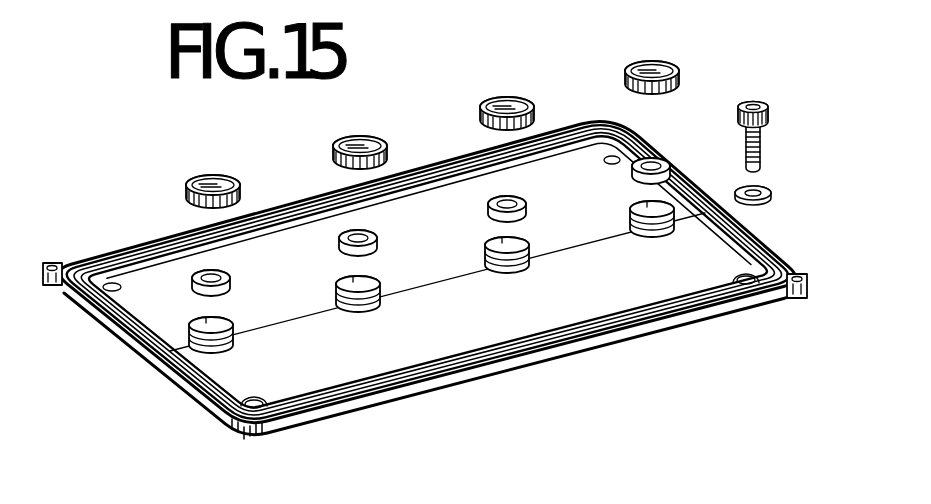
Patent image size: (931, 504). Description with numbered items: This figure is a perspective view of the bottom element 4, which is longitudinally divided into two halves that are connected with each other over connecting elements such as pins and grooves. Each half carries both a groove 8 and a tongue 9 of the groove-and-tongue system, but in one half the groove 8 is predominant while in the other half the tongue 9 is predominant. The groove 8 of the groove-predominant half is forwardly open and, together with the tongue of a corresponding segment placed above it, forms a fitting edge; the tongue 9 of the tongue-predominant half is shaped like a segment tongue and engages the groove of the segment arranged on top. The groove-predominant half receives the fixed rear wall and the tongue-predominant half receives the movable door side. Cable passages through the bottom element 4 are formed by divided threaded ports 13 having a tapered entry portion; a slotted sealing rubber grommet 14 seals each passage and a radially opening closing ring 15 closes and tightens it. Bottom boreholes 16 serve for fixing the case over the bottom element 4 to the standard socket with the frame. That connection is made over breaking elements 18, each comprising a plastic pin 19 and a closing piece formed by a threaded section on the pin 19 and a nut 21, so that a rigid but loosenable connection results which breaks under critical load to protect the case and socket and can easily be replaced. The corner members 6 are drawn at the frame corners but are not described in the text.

The bottom element 4 is at (427, 297).
The corner clamp 6 is at (44, 266).
The groove 8 is at (542, 348).
The tongue 9 is at (158, 240).
The divided threaded port 13 is at (314, 298).
The slotted sealing rubber grommet 14 is at (314, 252).
The closing ring 15 is at (333, 146).
The bottom borehole 16 is at (736, 284).
The breaking element 18 is at (777, 109).
The pin 19 is at (761, 156).
The nut 21 is at (772, 195).